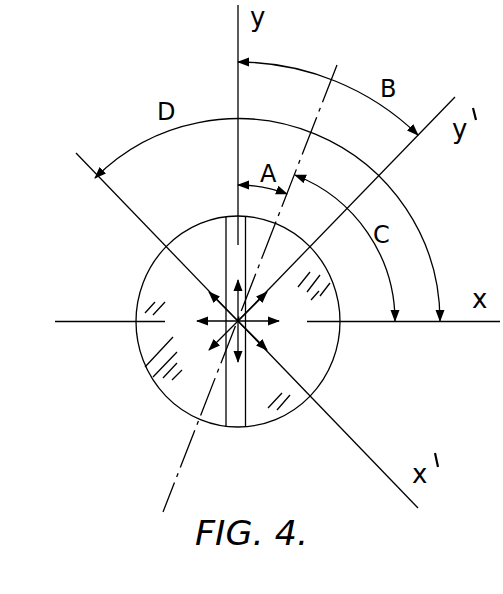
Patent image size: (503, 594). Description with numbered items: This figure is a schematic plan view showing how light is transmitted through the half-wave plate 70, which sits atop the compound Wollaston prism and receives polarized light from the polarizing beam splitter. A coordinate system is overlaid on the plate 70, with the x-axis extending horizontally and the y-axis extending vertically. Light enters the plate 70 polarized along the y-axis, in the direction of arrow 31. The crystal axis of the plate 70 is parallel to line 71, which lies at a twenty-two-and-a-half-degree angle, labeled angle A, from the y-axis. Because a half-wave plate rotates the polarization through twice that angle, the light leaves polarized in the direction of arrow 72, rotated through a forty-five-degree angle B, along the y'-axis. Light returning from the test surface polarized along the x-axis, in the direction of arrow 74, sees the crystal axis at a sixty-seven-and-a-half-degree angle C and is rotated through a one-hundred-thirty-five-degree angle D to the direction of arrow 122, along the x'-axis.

The arrow 31 is at (225, 290).
The half-wave plate 70 is at (310, 347).
The line 71 is at (180, 465).
The arrow 72 is at (268, 298).
The arrow 74 is at (205, 318).
The arrow 122 is at (257, 352).